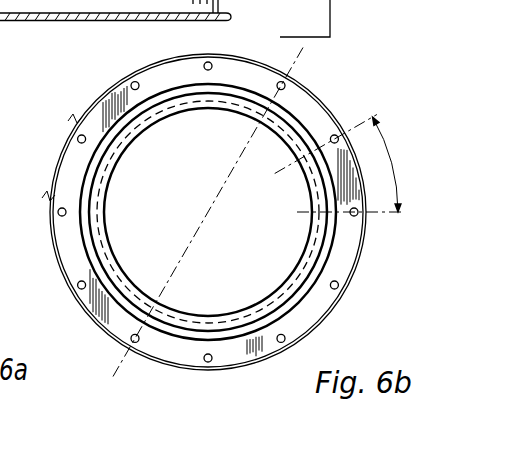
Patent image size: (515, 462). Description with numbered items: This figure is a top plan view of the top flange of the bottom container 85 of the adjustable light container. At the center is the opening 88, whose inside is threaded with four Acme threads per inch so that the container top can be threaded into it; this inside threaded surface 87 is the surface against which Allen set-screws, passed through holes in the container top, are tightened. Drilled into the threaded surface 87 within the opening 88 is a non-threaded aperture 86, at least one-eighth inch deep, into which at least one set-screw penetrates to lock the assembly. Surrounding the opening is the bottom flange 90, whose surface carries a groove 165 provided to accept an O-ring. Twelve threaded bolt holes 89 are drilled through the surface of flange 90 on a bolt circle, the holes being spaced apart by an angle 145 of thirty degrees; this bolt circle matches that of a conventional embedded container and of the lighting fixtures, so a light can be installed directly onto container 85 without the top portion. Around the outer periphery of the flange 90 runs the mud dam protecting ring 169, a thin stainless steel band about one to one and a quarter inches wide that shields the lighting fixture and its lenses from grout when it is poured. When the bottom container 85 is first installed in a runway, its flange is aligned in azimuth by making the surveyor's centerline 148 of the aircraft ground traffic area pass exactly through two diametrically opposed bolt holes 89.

The bottom container flange 85 is at (72, 95).
The drilled aperture 86 is at (158, 118).
The inside threaded surface 87 is at (312, 250).
The opening 88 is at (178, 202).
The threaded bolt holes 89 is at (286, 89).
The bottom flange 90 is at (58, 163).
The angle 145 is at (392, 160).
The centerline 148 is at (297, 69).
The groove 165 is at (337, 242).
The mud dam protecting ring 169 is at (133, 70).